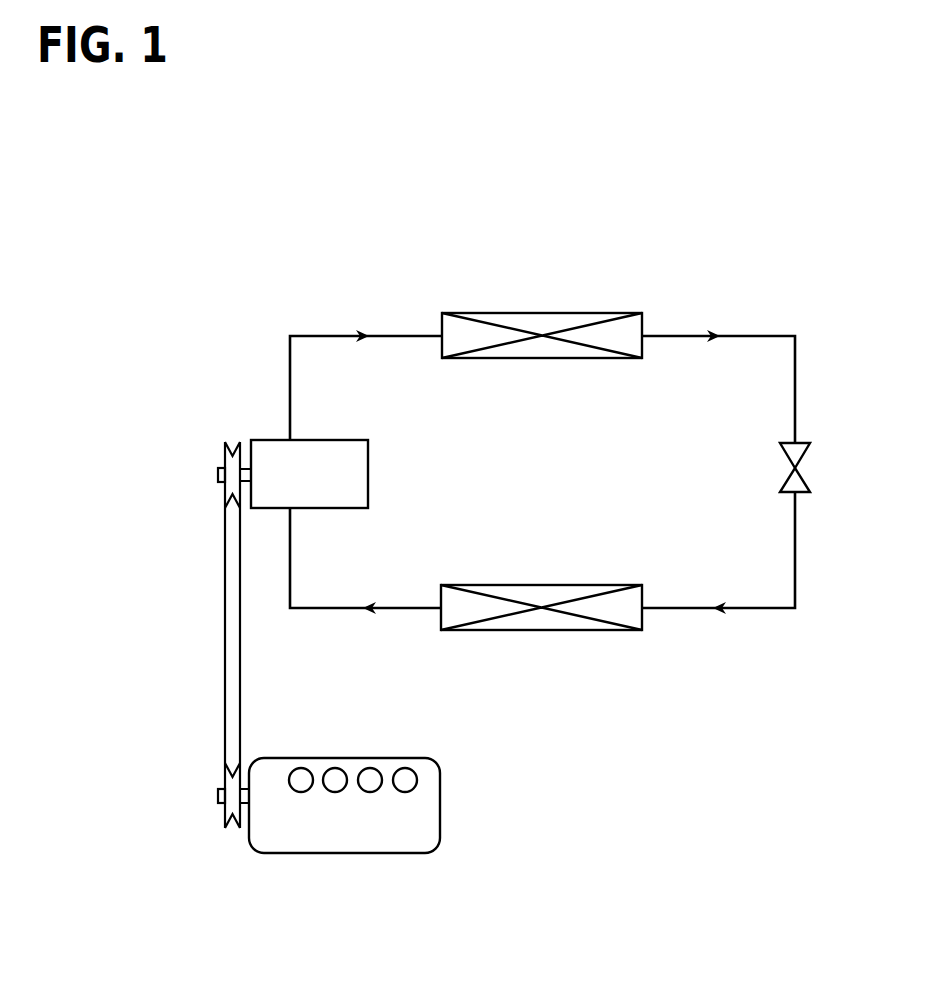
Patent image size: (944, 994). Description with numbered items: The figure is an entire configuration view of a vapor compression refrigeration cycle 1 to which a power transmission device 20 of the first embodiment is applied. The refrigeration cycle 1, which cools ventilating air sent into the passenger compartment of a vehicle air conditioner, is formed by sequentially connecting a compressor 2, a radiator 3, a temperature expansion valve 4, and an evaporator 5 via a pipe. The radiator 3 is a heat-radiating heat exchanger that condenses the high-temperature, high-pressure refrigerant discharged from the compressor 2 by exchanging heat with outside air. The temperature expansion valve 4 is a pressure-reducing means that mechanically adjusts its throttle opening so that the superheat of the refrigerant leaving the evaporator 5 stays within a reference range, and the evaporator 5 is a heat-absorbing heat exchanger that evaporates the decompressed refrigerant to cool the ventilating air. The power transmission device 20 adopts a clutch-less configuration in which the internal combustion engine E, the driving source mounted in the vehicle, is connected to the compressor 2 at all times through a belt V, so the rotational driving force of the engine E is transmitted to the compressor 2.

The refrigeration cycle 1 is at (744, 300).
The compressor 2 is at (369, 476).
The radiator 3 is at (535, 313).
The temperature expansion valve 4 is at (801, 470).
The evaporator 5 is at (534, 585).
The power transmission device 20 is at (223, 440).
The belt V is at (242, 696).
The engine E is at (441, 768).